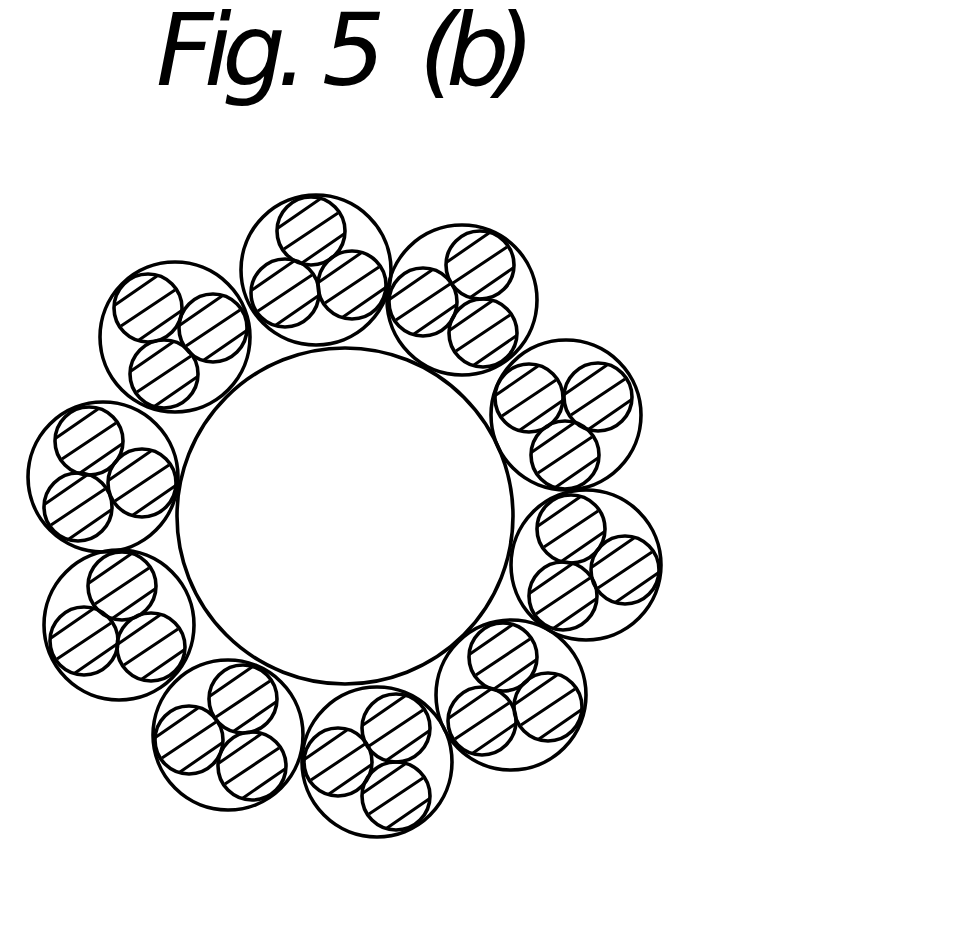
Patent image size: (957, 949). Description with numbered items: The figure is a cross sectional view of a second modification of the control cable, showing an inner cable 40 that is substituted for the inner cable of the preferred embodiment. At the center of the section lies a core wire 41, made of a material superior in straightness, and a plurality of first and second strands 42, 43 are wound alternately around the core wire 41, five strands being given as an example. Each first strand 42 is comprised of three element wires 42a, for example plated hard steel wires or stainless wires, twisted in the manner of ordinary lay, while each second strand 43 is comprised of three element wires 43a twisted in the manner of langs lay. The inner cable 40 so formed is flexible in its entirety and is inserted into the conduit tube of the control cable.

The inner cable 40 is at (642, 464).
The core wire 41 is at (352, 562).
The first strand 42 is at (327, 345).
The element wire 42a is at (317, 350).
The second strand 43 is at (354, 714).
The element wire 43a is at (368, 690).